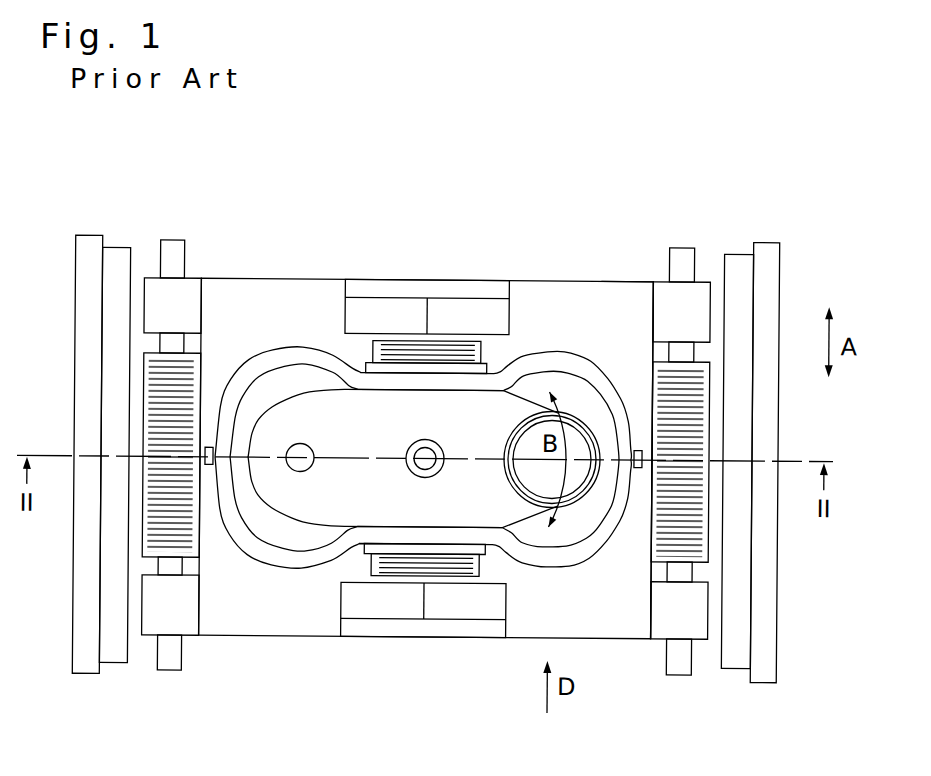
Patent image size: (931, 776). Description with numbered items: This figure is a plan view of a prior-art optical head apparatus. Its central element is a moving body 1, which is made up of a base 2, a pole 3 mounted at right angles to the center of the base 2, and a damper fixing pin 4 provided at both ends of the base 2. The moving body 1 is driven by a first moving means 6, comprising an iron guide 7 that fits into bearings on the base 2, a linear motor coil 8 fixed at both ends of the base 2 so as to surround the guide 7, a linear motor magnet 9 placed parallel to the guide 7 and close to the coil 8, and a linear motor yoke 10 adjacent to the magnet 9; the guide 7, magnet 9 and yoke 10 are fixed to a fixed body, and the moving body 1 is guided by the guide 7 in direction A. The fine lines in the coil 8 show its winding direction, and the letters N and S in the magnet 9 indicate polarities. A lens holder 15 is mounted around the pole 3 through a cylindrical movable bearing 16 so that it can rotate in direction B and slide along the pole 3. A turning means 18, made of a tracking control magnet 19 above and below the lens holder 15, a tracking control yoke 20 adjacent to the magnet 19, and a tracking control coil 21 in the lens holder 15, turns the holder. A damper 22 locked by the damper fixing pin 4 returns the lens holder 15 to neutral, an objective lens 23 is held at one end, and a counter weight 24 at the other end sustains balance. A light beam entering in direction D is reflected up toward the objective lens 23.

The moving body 1 is at (266, 279).
The base 2 is at (632, 280).
The pole 3 is at (428, 455).
The damper fixing pin 4 is at (209, 448).
The first moving means 6 is at (436, 485).
The guide 7 is at (183, 657).
The linear motor coil 8 is at (153, 380).
The linear motor magnet 9 is at (115, 666).
The linear motor yoke 10 is at (73, 638).
The lens holder 15 is at (293, 512).
The movable bearing 16 is at (438, 472).
The turning means 18 is at (355, 287).
The tracking control magnet 19 is at (410, 308).
The tracking control yoke 20 is at (492, 287).
The tracking control coil 21 is at (472, 562).
The damper 22 is at (300, 570).
The objective lens 23 is at (527, 430).
The counter weight 24 is at (308, 447).